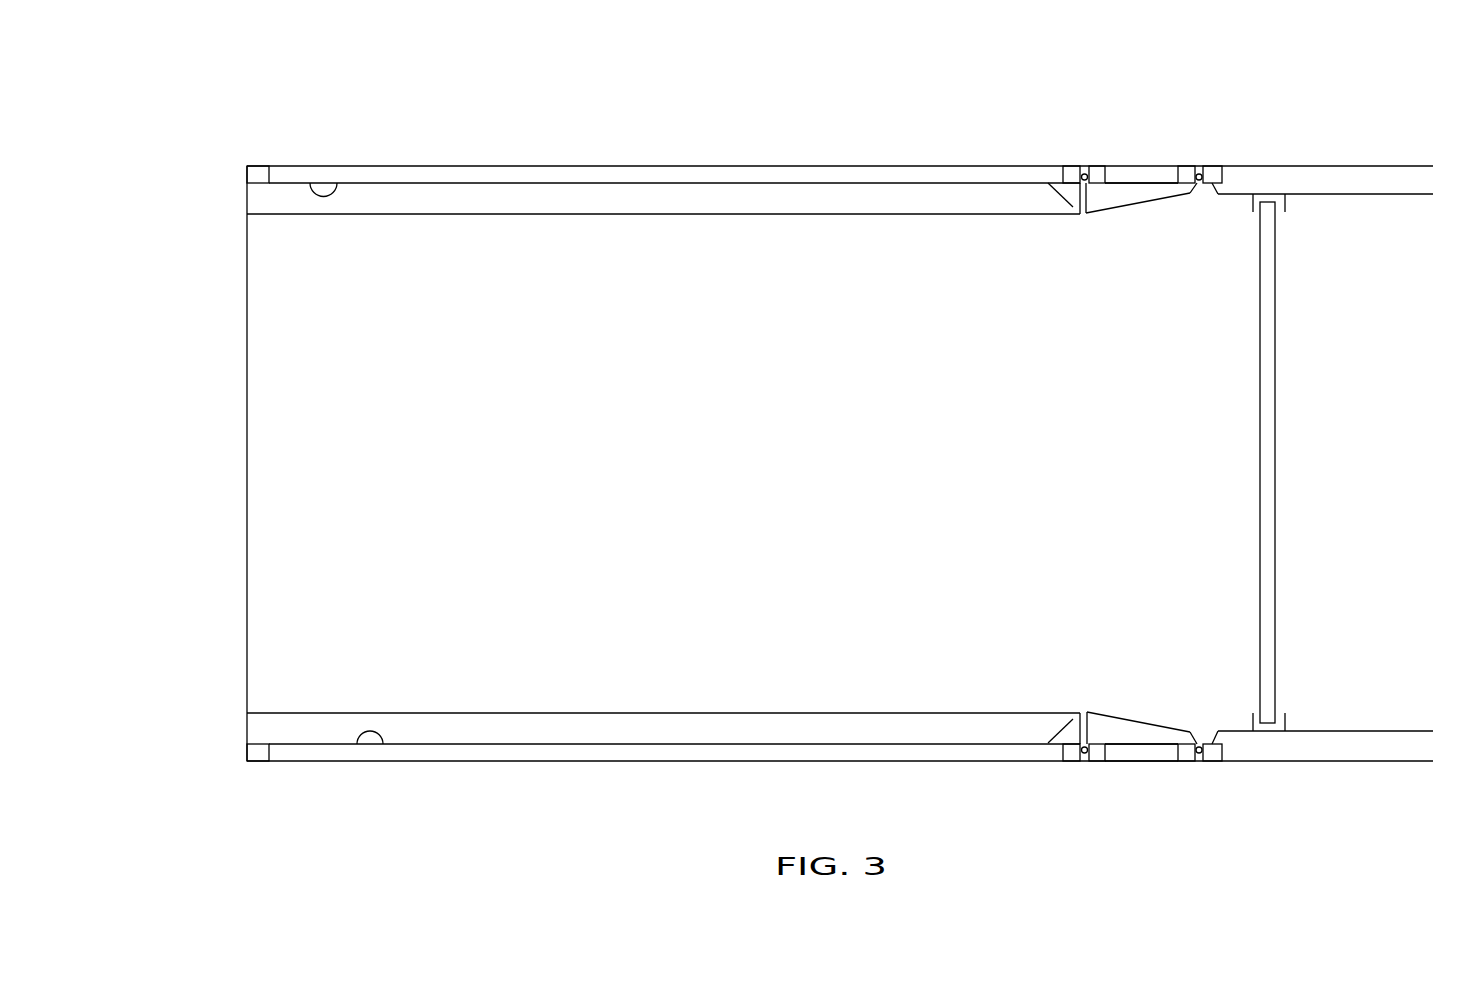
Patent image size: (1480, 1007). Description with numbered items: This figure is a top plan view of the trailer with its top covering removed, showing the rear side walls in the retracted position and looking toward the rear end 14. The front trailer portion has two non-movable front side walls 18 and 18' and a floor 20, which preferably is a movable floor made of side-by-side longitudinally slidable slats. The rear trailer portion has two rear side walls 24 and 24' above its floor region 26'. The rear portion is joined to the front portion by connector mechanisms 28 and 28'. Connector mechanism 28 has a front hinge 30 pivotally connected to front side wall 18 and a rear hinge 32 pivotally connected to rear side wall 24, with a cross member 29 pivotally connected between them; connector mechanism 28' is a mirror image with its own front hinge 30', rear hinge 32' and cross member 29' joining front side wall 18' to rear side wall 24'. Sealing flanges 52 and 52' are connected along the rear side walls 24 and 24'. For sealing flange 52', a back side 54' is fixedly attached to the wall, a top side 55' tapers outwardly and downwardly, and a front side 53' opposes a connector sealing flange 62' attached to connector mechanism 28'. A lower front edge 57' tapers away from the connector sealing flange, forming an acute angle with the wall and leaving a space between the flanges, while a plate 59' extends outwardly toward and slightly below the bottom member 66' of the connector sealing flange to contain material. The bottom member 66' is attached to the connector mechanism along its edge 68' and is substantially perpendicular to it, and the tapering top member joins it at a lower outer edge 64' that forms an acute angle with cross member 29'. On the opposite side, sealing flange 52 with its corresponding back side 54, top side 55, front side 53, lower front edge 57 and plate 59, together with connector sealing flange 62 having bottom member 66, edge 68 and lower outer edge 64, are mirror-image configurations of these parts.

The rear end 14 is at (218, 269).
The front side wall 18 is at (1322, 797).
The front side wall 18' is at (1339, 142).
The floor 20 is at (1328, 272).
The rear side wall 24 is at (840, 809).
The rear side wall 24' is at (655, 129).
The side panel 26' is at (663, 204).
The connector mechanism 28 is at (1141, 833).
The connector mechanism 28' is at (1141, 118).
The cross member 29 is at (1145, 804).
The cross member 29' is at (1142, 110).
The front hinge 30 is at (1216, 820).
The front hinge 30' is at (1217, 138).
The rear hinge 32 is at (1074, 800).
The rear hinge 32' is at (1070, 128).
The sealing flange 52 is at (663, 660).
The sealing flange 52' is at (589, 268).
The latch 53 is at (1025, 689).
The front side 53' is at (1028, 219).
The notch 54 is at (381, 786).
The back side 54' is at (334, 136).
The flange web 55 is at (674, 660).
The top side 55' is at (674, 238).
The end wall 57 is at (1045, 675).
The lower front edge 57' is at (1038, 238).
The end wall 59 is at (1068, 659).
The plate 59' is at (1063, 257).
The connector sealing flange 62 is at (1128, 643).
The connector sealing flange 62' is at (1117, 279).
The shoulder 64 is at (1218, 716).
The lower outer edge 64' is at (1218, 213).
The tapered wall 66 is at (1143, 672).
The bottom member 66' is at (1138, 246).
The base wall 68 is at (1167, 697).
The edge 68' is at (1159, 224).